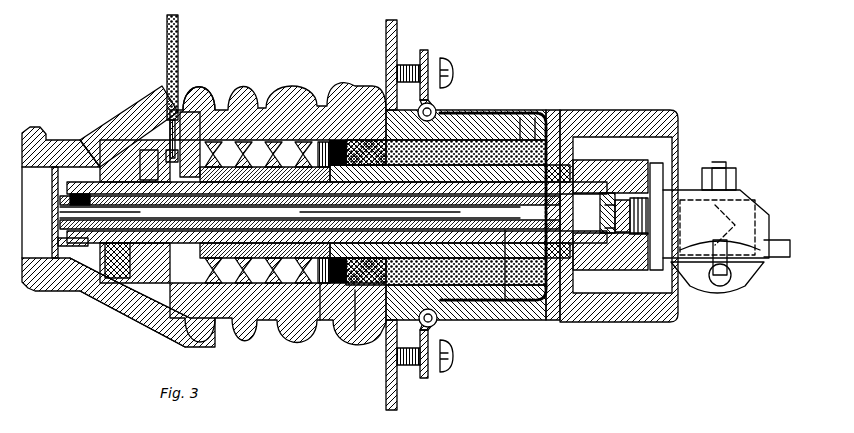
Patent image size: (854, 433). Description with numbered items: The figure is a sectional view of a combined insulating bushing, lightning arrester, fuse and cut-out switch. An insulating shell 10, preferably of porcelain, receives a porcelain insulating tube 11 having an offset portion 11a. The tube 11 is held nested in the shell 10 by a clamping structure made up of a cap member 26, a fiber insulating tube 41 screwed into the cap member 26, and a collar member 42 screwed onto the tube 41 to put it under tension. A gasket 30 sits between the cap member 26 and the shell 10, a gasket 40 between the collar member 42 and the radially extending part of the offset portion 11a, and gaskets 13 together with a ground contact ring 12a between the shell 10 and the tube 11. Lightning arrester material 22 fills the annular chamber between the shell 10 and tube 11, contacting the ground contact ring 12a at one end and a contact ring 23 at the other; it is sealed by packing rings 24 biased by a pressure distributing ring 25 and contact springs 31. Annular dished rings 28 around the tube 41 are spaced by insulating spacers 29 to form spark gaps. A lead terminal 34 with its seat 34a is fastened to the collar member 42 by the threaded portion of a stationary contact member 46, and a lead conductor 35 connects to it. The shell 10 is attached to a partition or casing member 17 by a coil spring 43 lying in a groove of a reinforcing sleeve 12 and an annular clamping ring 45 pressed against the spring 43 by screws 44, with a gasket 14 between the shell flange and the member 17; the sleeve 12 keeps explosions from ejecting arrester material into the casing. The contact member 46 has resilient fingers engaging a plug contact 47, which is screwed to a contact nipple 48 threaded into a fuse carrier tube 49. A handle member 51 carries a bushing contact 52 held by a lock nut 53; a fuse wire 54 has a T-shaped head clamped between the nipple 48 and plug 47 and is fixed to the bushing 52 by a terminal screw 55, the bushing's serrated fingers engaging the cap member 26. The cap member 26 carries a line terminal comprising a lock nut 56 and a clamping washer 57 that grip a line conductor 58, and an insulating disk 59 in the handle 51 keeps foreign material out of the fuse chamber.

The insulating shell 10 is at (248, 100).
The insulating tube 11 is at (478, 165).
The offset portion 11a is at (628, 113).
The reinforcing sleeve 12 is at (496, 112).
The ground contact ring 12a is at (527, 112).
The gaskets 13 is at (550, 118).
The gasket 14 is at (384, 330).
The partition or casing member 17 is at (397, 32).
The lightning arrester material 22 is at (449, 150).
The contact ring 23 is at (346, 118).
The packing rings 24 is at (333, 140).
The pressure distributing ring 25 is at (338, 300).
The cap member 26 is at (183, 118).
The annular dished rings 28 is at (267, 215).
The insulating spacers 29 is at (291, 275).
The gasket 30 is at (210, 98).
The contact springs 31 is at (321, 300).
The lead terminal 34 is at (750, 205).
The head bracket 34a is at (680, 290).
The lead conductor 35 is at (784, 257).
The gasket 40 is at (580, 165).
The insulating tube 41 is at (596, 192).
The collar member 42 is at (658, 163).
The coil spring 43 is at (438, 320).
The screws 44 is at (449, 70).
The clamping ring 45 is at (424, 52).
The stationary contact member 46 is at (648, 226).
The plug contact 47 is at (612, 233).
The contact nipple 48 is at (506, 300).
The fuse carrier tube 49 is at (66, 238).
The handle member 51 is at (48, 278).
The bushing contact 52 is at (75, 258).
The lock nut 53 is at (112, 262).
The fuse wire 54 is at (62, 200).
The terminal screw 55 is at (60, 182).
The lock nut 56 is at (130, 121).
The clamping washer 57 is at (167, 150).
The line conductor 58 is at (167, 26).
The disk 59 is at (58, 244).